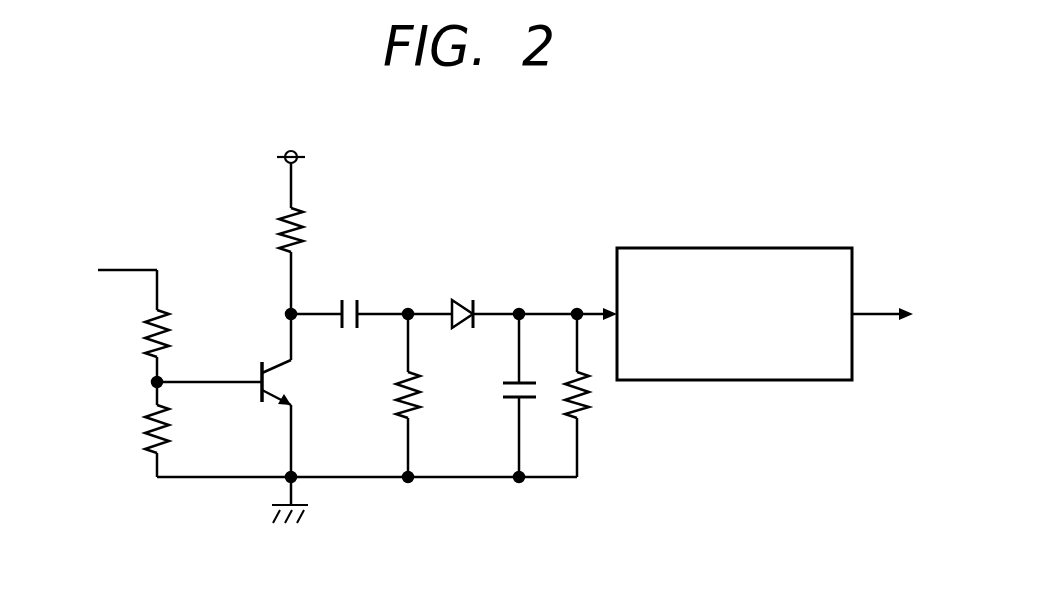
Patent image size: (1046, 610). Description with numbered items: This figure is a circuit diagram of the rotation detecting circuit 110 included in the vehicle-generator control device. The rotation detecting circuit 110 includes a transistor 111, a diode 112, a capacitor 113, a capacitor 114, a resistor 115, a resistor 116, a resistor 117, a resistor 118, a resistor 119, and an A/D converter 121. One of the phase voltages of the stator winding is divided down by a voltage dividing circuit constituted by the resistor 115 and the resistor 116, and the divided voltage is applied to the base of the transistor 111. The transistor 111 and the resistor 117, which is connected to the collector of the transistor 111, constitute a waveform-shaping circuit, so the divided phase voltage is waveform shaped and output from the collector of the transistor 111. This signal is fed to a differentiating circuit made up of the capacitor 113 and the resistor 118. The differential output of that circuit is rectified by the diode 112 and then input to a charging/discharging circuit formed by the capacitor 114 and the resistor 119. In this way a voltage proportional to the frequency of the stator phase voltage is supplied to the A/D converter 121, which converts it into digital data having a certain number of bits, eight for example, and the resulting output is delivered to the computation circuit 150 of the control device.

The rotation detecting circuit 110 is at (606, 190).
The transistor 111 is at (272, 362).
The diode 112 is at (468, 297).
The capacitor 113 is at (357, 297).
The capacitor 114 is at (503, 391).
The resistor 115 is at (146, 344).
The resistor 116 is at (146, 440).
The resistor 117 is at (279, 224).
The resistor 118 is at (395, 406).
The resistor 119 is at (590, 400).
The A/D converter 121 is at (773, 248).
The computation circuit 150 is at (906, 317).